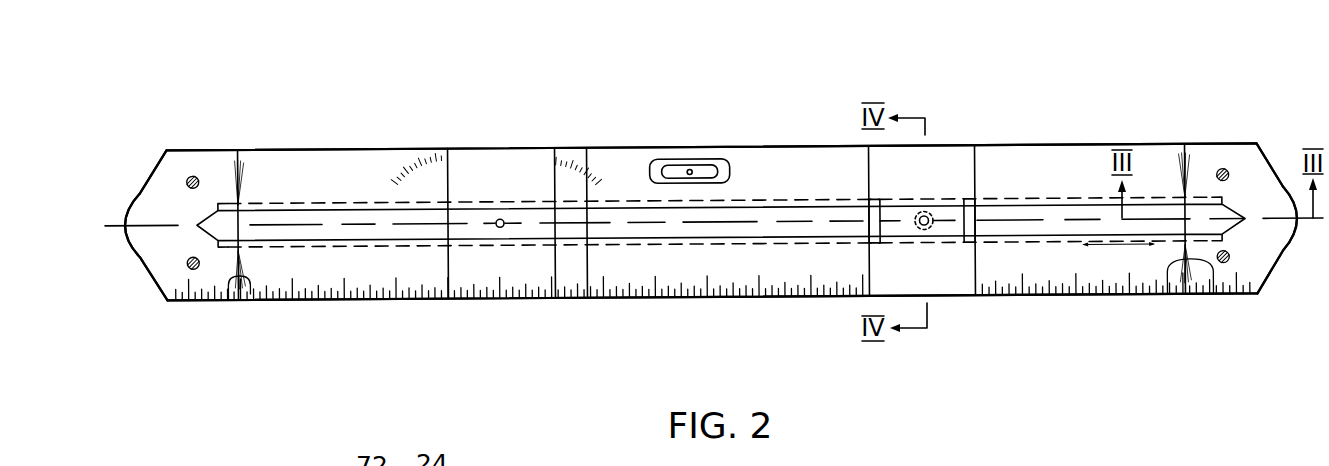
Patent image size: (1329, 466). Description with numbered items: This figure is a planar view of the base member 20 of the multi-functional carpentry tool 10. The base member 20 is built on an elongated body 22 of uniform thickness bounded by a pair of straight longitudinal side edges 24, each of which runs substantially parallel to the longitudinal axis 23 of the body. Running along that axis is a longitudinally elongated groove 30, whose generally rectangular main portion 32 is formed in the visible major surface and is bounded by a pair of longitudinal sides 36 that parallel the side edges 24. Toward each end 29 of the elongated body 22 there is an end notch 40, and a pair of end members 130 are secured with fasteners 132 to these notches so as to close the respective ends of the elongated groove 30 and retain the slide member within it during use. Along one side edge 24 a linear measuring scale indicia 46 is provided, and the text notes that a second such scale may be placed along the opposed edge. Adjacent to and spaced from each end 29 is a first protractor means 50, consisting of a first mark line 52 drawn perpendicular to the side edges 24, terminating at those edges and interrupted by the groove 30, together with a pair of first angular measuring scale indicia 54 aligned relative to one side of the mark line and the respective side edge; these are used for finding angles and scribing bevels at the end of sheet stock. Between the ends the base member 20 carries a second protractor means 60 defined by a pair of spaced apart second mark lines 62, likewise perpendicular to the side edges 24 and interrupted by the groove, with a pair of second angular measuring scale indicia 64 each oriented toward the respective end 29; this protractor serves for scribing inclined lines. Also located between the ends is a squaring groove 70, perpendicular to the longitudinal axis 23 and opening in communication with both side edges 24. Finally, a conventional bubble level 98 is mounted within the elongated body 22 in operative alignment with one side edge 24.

The multi-functional carpentry tool 10 is at (393, 57).
The base member 20 is at (522, 91).
The elongated body 22 is at (1013, 145).
The longitudinal axis 23 is at (113, 228).
The longitudinal side edges 24 is at (1090, 144).
The end 29 is at (146, 150).
The longitudinally elongated groove 30 is at (358, 209).
The main portion 32 is at (320, 206).
The longitudinal sides 36 is at (668, 234).
The end notches 40 is at (215, 148).
The linear measuring scale indicia 46 is at (527, 282).
The first protractor means 50 is at (264, 108).
The first mark line 52 is at (231, 300).
The first angular measuring scale indicia 54 is at (247, 184).
The second protractor means 60 is at (578, 107).
The second mark lines 62 is at (553, 168).
The second angular measuring scale indicia 64 is at (412, 158).
The squaring groove 70 is at (957, 158).
The bubble level 98 is at (710, 158).
The end members 130 is at (163, 265).
The fasteners 132 is at (200, 269).